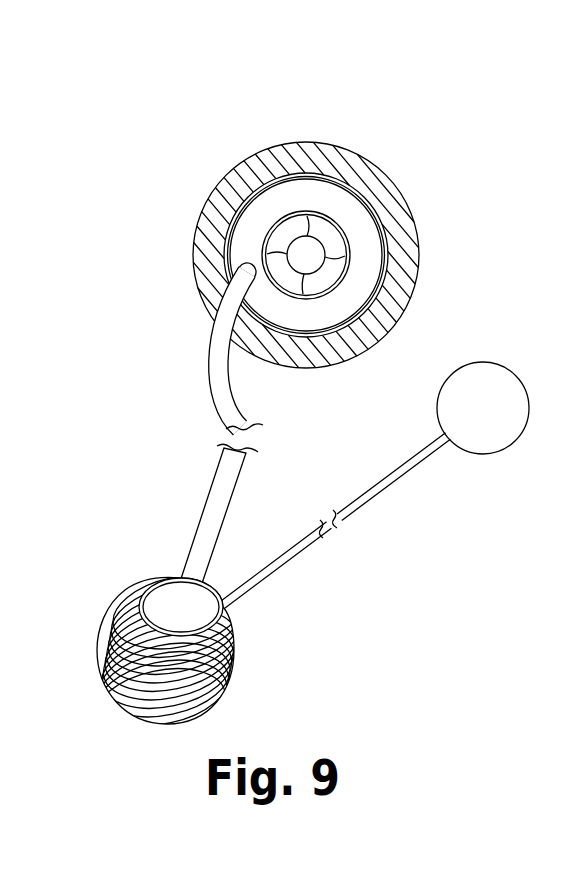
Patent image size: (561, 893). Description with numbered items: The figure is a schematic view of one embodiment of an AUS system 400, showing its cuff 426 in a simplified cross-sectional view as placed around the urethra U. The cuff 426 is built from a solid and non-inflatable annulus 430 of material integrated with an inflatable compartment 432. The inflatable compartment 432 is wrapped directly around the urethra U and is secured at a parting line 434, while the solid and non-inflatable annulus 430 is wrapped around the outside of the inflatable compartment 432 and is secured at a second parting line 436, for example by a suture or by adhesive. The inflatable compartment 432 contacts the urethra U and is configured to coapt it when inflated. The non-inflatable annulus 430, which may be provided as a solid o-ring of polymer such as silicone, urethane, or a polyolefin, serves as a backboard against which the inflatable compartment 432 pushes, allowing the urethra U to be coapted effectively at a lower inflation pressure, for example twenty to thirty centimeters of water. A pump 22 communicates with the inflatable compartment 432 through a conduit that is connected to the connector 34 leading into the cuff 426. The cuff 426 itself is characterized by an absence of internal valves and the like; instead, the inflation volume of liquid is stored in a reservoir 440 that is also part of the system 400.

The AUS system 400 is at (366, 86).
The cuff 426 is at (378, 161).
The solid and non-inflatable annulus 430 is at (213, 270).
The inflatable compartment 432 is at (258, 223).
The parting line 434 is at (283, 215).
The parting line 436 is at (341, 176).
The urethra U is at (332, 272).
The connector 34 is at (214, 367).
The reservoir 440 is at (512, 443).
The pump 22 is at (237, 650).